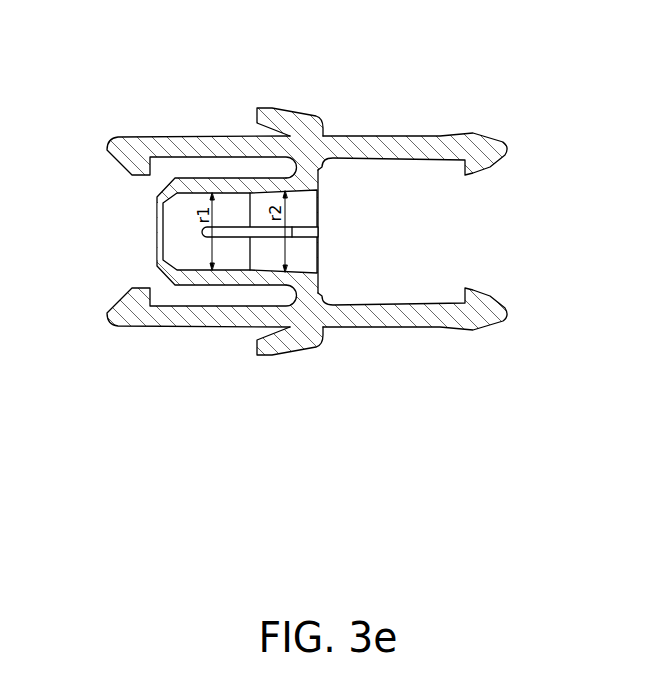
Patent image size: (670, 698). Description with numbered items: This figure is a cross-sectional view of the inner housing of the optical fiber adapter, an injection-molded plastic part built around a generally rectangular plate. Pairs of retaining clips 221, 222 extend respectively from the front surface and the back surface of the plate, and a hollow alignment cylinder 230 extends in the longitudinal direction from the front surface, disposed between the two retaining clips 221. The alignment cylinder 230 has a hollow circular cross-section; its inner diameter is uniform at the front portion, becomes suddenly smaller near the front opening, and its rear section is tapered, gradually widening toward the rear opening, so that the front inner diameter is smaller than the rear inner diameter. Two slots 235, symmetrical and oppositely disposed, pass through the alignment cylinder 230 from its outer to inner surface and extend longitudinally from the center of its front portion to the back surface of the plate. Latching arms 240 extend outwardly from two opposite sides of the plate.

The retaining clips 221 is at (122, 150).
The retaining clips 222 is at (490, 148).
The alignment cylinder 230 is at (188, 205).
The slots 235 is at (228, 234).
The latching arms 240 is at (275, 114).